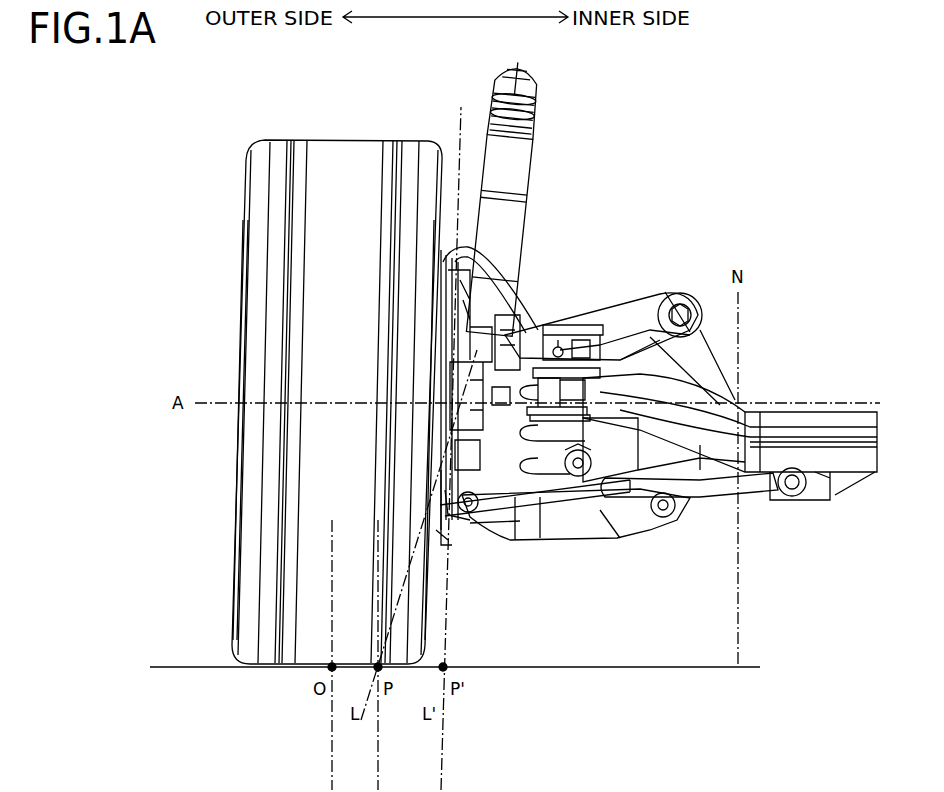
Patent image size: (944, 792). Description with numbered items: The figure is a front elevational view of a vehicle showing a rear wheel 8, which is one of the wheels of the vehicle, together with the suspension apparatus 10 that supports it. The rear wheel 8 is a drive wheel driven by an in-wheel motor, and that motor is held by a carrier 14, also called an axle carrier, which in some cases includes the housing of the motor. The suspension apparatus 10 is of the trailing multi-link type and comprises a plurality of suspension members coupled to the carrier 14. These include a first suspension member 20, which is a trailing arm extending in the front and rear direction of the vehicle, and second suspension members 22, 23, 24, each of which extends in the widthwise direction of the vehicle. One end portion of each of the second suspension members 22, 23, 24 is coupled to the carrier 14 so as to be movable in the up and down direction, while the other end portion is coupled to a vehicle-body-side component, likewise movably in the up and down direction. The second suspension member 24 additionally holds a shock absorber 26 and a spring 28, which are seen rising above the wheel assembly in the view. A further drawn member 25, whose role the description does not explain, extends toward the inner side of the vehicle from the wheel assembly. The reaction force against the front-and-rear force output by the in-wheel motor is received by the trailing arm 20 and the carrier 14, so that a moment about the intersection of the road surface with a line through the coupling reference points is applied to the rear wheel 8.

The rear wheel 8 is at (203, 333).
The suspension apparatus 10 is at (633, 262).
The carrier 14 is at (465, 541).
The first suspension member 20 is at (462, 512).
The second suspension member 22 is at (485, 278).
The second suspension member 23 is at (537, 478).
The second suspension member 24 is at (597, 517).
The trailing arm 25 is at (823, 420).
The shock absorber 26 is at (515, 177).
The spring 28 is at (547, 325).